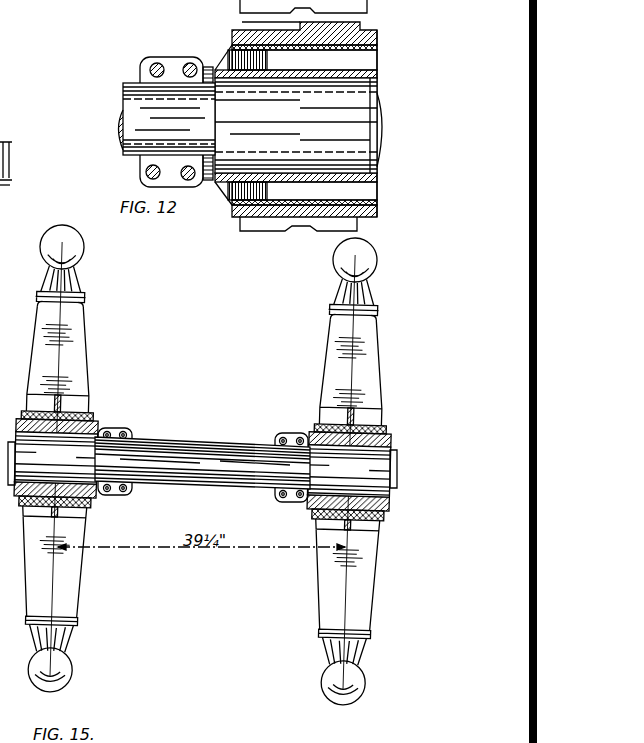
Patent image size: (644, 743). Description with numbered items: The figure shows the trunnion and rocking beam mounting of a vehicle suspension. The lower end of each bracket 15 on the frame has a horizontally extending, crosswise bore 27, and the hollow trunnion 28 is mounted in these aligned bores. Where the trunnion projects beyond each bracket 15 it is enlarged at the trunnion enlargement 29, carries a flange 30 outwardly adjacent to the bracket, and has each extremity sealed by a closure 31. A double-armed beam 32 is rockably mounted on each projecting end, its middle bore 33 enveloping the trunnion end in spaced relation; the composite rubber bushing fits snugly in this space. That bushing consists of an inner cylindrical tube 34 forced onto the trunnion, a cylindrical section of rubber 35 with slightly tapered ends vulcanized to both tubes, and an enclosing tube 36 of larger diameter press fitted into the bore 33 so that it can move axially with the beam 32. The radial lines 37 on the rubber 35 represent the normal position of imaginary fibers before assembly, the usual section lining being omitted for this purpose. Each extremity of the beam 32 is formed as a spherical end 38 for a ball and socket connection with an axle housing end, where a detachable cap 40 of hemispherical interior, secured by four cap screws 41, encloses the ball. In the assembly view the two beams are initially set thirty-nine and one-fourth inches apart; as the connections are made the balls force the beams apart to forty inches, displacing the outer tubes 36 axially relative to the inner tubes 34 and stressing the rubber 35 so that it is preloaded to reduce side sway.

In FIG. 12, the bracket 15 is at (146, 116).
In FIG. 15, the bracket 15 is at (203, 461).
In FIG. 12, the bore 27 is at (147, 78).
In FIG. 15, the bore 27 is at (132, 488).
In FIG. 12, the hollow trunnion 28 is at (123, 105).
In FIG. 15, the hollow trunnion 28 is at (200, 446).
In FIG. 12, the trunnion enlargement 29 is at (360, 143).
In FIG. 15, the trunnion enlargement 29 is at (202, 464).
In FIG. 12, the flange 30 is at (213, 135).
In FIG. 15, the flange 30 is at (97, 485).
In FIG. 12, the closure 31 is at (380, 128).
In FIG. 12, the double-armed beam 32 is at (377, 38).
In FIG. 15, the double-armed beam 32 is at (85, 332).
In FIG. 12, the middle bore 33 is at (367, 8).
In FIG. 15, the middle bore 33 is at (78, 530).
In FIG. 12, the inner cylindrical tube 34 is at (370, 82).
In FIG. 15, the inner cylindrical tube 34 is at (97, 424).
In FIG. 12, the cylindrical section of rubber 35 is at (372, 67).
In FIG. 15, the cylindrical section of rubber 35 is at (72, 410).
In FIG. 12, the enclosing tube 36 is at (377, 48).
In FIG. 15, the enclosing tube 36 is at (66, 400).
In FIG. 12, the radial lines 37 is at (228, 62).
In FIG. 15, the spherical end 38 is at (52, 237).
In FIG. 12, the detachable cap 40 is at (3, 182).
In FIG. 12, the cap screw 41 is at (12, 148).